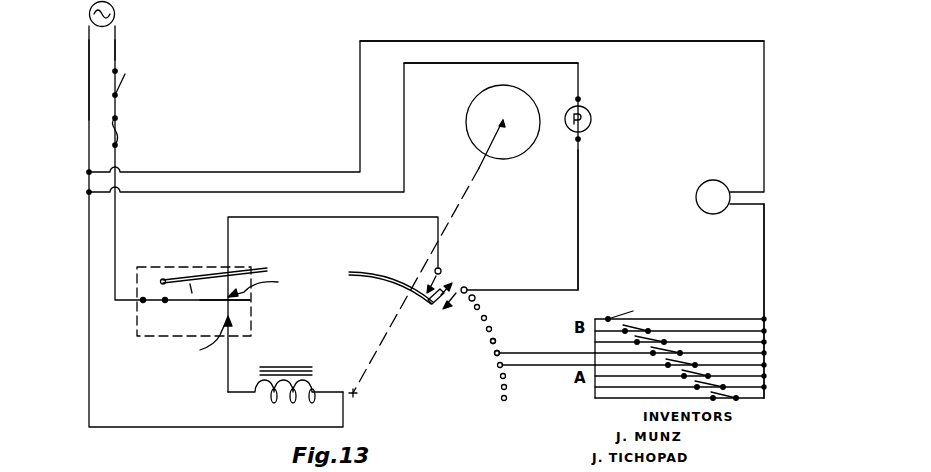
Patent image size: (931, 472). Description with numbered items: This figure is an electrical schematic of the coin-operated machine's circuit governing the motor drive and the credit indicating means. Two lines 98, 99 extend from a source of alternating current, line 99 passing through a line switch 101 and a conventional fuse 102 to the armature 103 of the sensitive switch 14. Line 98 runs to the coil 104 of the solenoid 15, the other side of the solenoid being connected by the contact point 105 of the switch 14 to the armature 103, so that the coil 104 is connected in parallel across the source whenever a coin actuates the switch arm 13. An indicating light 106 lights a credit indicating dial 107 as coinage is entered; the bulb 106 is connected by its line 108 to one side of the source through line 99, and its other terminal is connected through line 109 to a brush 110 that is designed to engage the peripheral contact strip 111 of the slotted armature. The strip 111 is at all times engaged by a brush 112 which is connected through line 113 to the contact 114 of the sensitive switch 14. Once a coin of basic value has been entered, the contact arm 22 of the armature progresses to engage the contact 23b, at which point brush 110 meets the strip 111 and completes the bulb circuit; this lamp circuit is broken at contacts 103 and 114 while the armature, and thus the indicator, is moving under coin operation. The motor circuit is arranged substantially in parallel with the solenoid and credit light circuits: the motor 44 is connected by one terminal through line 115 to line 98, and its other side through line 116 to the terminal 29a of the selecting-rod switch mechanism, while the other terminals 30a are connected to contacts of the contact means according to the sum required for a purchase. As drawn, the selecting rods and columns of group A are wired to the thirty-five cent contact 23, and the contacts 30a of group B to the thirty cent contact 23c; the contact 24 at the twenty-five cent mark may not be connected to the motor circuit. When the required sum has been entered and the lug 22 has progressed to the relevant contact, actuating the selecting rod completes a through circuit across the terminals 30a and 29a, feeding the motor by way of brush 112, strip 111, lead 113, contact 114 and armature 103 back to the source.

The line 98 is at (88, 60).
The line 99 is at (117, 56).
The line switch 101 is at (118, 95).
The fuse 102 is at (120, 138).
The armature 103 is at (212, 305).
The coil 104 is at (282, 400).
The contact point 105 is at (207, 341).
The indicating light 106 is at (592, 121).
The credit indicating dial 107 is at (537, 102).
The line 108 is at (472, 66).
The line 109 is at (580, 176).
The brush 110 is at (467, 288).
The peripheral contact strip 111 is at (387, 273).
The brush 112 is at (441, 266).
The line 113 is at (356, 218).
The contact 114 is at (268, 287).
The line 115 is at (493, 41).
The line 116 is at (764, 285).
The switch arm 13 is at (257, 268).
The sensitive switch 14 is at (255, 314).
The solenoid 15 is at (280, 365).
The armature contact element 22 is at (428, 301).
The contact 23 is at (504, 367).
The contact 23b is at (471, 302).
The contact 23c is at (500, 351).
The contact 24 is at (496, 338).
The terminal 30a is at (607, 318).
The terminal 29a is at (631, 311).
The motor 44 is at (718, 180).